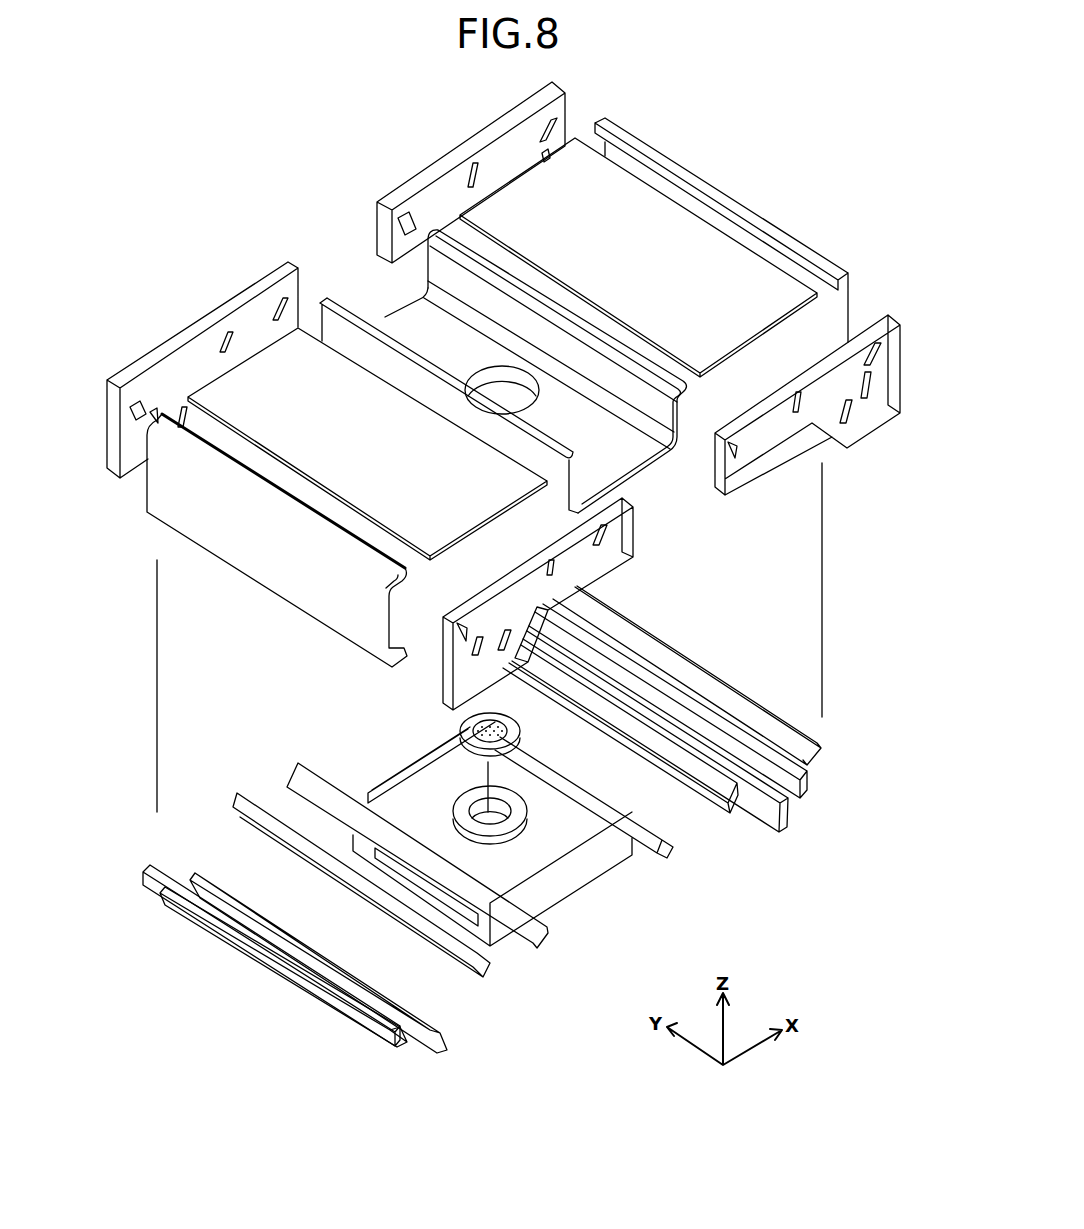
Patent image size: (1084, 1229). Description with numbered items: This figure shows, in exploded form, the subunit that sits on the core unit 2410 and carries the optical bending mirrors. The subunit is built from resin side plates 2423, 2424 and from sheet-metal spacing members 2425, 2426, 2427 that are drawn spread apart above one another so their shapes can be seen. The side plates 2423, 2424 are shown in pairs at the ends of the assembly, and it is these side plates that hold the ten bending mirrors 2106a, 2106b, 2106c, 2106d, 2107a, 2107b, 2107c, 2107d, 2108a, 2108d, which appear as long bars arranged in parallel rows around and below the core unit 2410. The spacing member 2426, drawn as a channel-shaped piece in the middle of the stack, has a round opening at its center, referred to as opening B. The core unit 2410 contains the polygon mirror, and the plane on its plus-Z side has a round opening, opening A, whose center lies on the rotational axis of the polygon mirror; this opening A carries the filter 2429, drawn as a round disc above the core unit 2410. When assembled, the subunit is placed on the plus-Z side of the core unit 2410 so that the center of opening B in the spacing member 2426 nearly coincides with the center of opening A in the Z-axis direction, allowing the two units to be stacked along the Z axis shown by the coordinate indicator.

The side plate 2424 is at (471, 138).
The spacing member 2427 is at (622, 178).
The spacing member 2425 is at (718, 188).
The spacing member 2426 is at (403, 312).
The side plate 2423 is at (857, 440).
The filter 2429 is at (460, 731).
The core unit 2410 is at (587, 887).
The bending mirror 2108a is at (813, 734).
The bending mirror 2106b is at (810, 782).
The bending mirror 2106a is at (787, 822).
The bending mirror 2107a is at (715, 808).
The bending mirror 2107b is at (668, 862).
The bending mirror 2107c is at (543, 937).
The bending mirror 2107d is at (490, 977).
The bending mirror 2108d is at (160, 870).
The bending mirror 2106c is at (393, 1053).
The bending mirror 2106d is at (447, 1053).